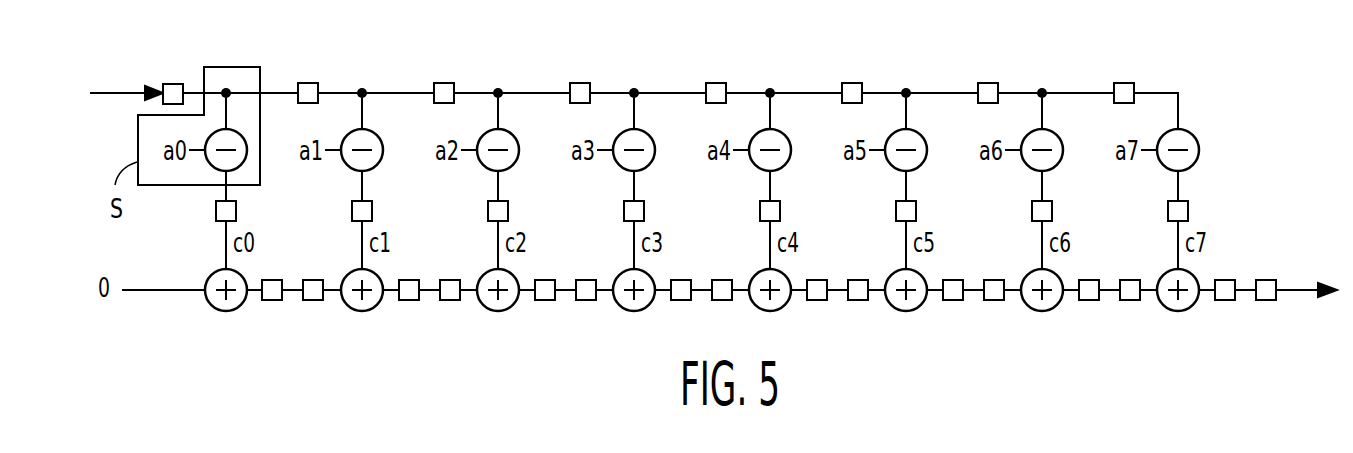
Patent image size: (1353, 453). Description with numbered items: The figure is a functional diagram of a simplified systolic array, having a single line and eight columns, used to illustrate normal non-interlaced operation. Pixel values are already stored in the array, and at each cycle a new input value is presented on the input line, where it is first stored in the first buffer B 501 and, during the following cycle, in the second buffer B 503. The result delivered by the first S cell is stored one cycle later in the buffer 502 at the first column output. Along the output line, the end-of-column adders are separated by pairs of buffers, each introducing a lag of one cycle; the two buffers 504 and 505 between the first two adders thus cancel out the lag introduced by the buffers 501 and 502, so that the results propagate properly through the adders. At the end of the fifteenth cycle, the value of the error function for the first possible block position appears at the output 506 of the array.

The first buffer B 501 is at (172, 84).
The buffer 502 is at (237, 210).
The second buffer B 503 is at (309, 83).
The buffer 504 is at (272, 301).
The buffer 505 is at (313, 301).
The output 506 is at (1297, 294).